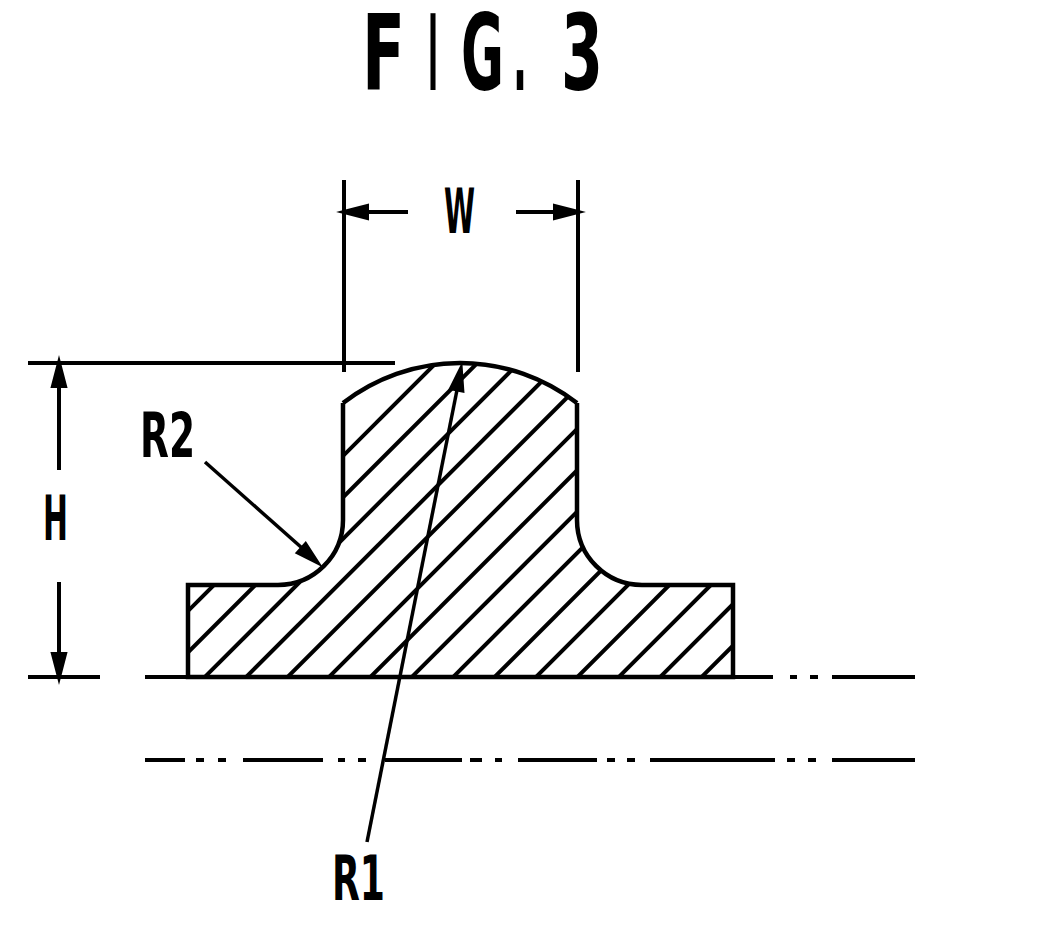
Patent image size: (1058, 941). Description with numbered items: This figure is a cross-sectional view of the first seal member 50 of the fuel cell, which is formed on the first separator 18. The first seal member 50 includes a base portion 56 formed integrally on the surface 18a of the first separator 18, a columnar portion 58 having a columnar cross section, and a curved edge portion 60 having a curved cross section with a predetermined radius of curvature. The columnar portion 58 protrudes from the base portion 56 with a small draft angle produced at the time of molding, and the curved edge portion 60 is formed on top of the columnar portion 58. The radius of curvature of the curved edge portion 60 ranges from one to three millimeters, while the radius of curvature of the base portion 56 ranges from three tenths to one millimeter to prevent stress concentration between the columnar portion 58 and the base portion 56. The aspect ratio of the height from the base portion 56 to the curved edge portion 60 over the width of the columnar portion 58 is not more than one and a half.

The first seal member 50 is at (564, 442).
The base portion 56 is at (667, 613).
The columnar portion 58 is at (583, 453).
The curved edge portion 60 is at (507, 368).
The first separator 18 is at (713, 722).
The surface of the first separator 18a is at (847, 677).